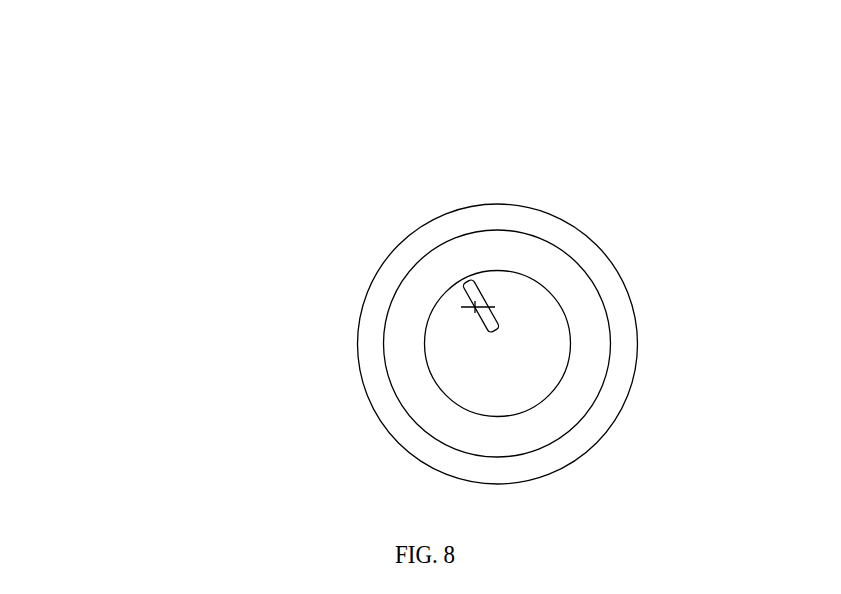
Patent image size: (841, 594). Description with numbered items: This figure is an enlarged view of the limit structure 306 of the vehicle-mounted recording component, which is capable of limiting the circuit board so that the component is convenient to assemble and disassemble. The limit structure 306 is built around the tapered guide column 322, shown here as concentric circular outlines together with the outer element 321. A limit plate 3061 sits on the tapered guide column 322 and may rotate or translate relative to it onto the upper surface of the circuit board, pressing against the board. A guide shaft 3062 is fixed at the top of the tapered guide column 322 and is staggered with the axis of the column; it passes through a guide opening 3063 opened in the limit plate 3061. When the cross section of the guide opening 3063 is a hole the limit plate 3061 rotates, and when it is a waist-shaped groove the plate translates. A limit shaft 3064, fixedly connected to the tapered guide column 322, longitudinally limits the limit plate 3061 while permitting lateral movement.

The outer ring 321 is at (498, 217).
The tapered guide column 322 is at (587, 343).
The limit structure 306 is at (153, 487).
The limit plate 3061 is at (487, 397).
The guide shaft 3062 is at (478, 313).
The guide opening 3063 is at (486, 395).
The limit shaft 3064 is at (470, 305).